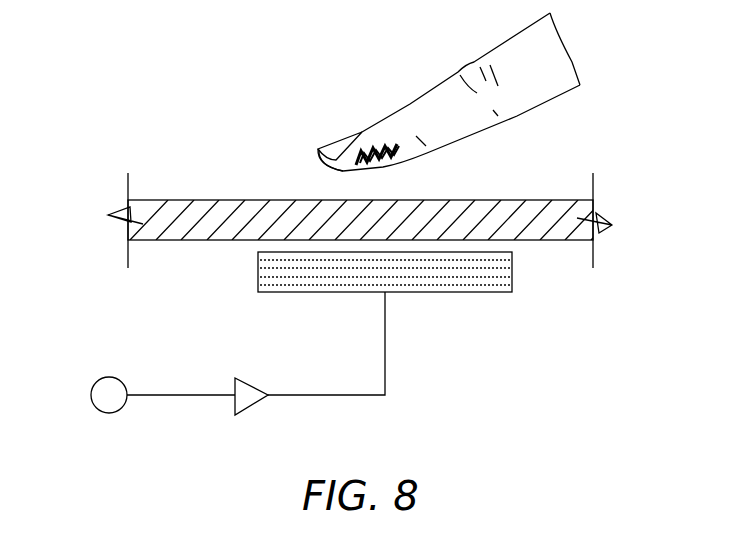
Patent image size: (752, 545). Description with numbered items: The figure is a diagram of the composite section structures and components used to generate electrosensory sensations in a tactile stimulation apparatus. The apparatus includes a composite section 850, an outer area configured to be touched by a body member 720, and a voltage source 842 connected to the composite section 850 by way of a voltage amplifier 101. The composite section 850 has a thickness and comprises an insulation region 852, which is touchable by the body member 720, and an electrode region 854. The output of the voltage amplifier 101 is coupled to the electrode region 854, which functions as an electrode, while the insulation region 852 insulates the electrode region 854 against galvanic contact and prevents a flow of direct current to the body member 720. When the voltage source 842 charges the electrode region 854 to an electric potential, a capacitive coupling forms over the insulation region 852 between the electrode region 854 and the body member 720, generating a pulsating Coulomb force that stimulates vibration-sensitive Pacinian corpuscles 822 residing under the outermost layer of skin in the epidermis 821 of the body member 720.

The body member 720 is at (357, 108).
The epidermis 821 is at (323, 158).
The Pacinian corpuscles 822 is at (400, 156).
The composite section 850 is at (90, 173).
The insulation region 852 is at (595, 203).
The electrode region 854 is at (513, 273).
The voltage source 842 is at (109, 377).
The voltage amplifier 101 is at (252, 384).